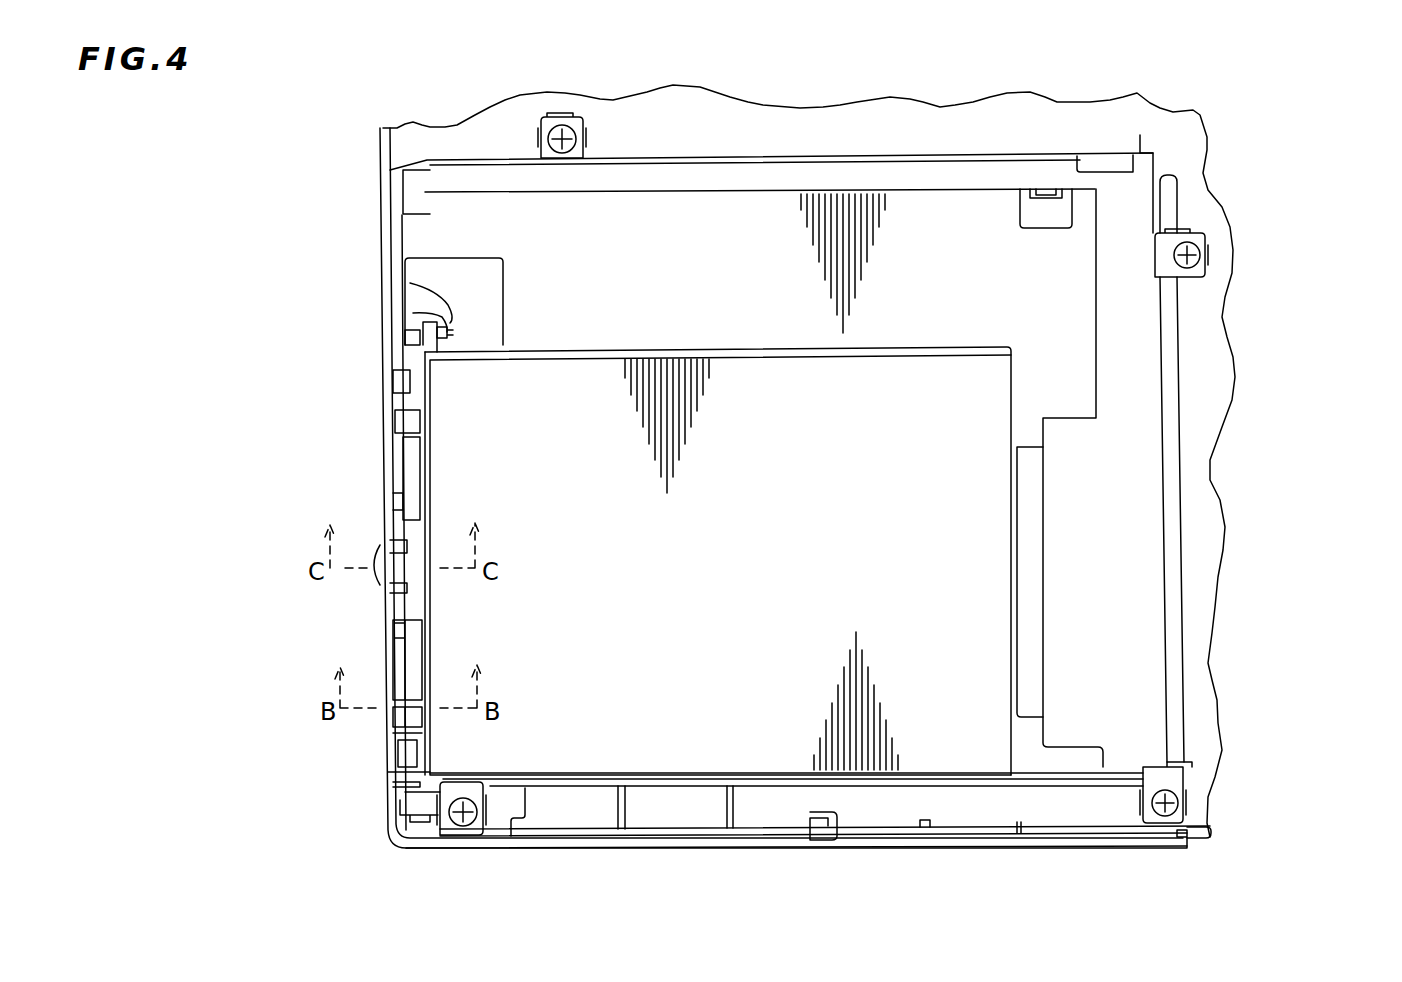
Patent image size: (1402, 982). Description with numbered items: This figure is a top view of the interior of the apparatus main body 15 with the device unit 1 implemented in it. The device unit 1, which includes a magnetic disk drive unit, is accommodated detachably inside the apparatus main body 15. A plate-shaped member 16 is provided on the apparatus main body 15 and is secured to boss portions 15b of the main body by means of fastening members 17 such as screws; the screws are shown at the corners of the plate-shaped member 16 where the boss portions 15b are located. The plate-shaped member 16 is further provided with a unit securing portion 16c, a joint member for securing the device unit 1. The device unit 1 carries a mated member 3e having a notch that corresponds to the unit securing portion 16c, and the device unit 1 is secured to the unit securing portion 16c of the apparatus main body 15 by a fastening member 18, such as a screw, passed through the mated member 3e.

The device unit 1 is at (470, 455).
The mated member 3e is at (443, 322).
The apparatus main body 15 is at (540, 855).
The boss portions 15b is at (538, 133).
The plate-shaped member 16 is at (1033, 284).
The unit securing portion 16c is at (447, 320).
The fastening members 17 is at (572, 133).
The fastening member 18 is at (396, 329).